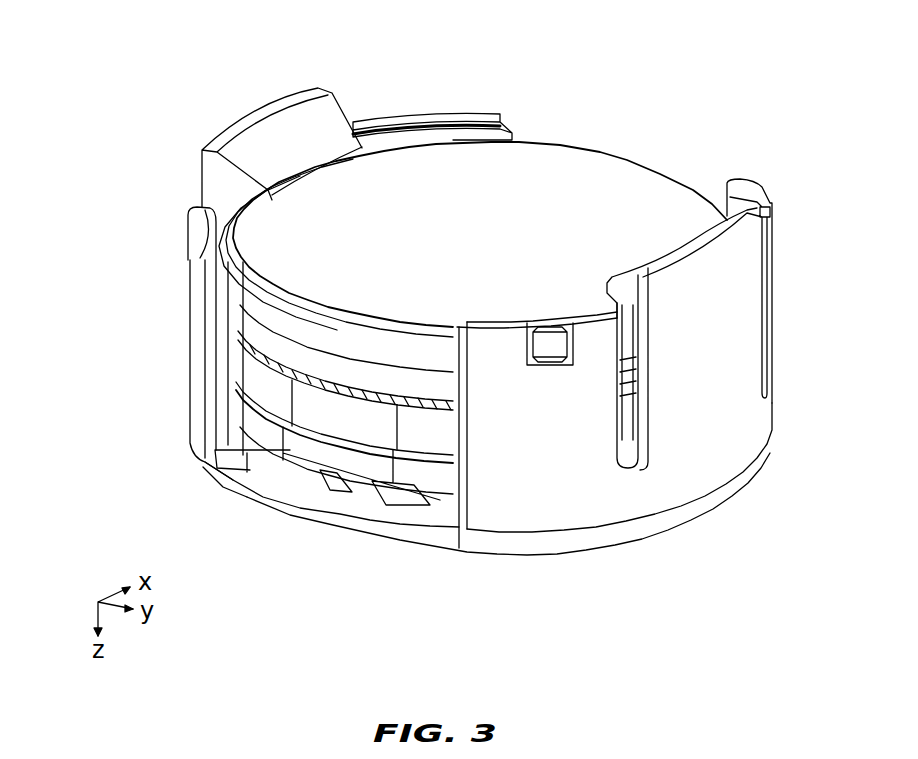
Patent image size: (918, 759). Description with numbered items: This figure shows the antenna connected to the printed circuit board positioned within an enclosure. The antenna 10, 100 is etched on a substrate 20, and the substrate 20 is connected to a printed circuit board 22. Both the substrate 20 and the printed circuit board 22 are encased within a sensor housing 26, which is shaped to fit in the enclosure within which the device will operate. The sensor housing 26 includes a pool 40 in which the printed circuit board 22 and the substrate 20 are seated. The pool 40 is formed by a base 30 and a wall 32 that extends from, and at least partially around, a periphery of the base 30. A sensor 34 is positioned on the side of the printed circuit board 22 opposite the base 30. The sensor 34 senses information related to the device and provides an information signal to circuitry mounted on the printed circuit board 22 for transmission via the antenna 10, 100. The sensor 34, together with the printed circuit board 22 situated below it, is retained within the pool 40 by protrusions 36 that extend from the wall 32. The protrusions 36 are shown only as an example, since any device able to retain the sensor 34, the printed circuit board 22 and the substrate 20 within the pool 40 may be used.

The antenna 10 is at (407, 335).
The antenna 100 is at (407, 335).
The substrate 20 is at (333, 417).
The printed circuit board 22 is at (380, 470).
The sensor housing 26 is at (190, 258).
The base 30 is at (427, 545).
The wall 32 is at (686, 500).
The sensor 34 is at (549, 183).
The protrusions 36 is at (288, 130).
The pool 40 is at (329, 514).